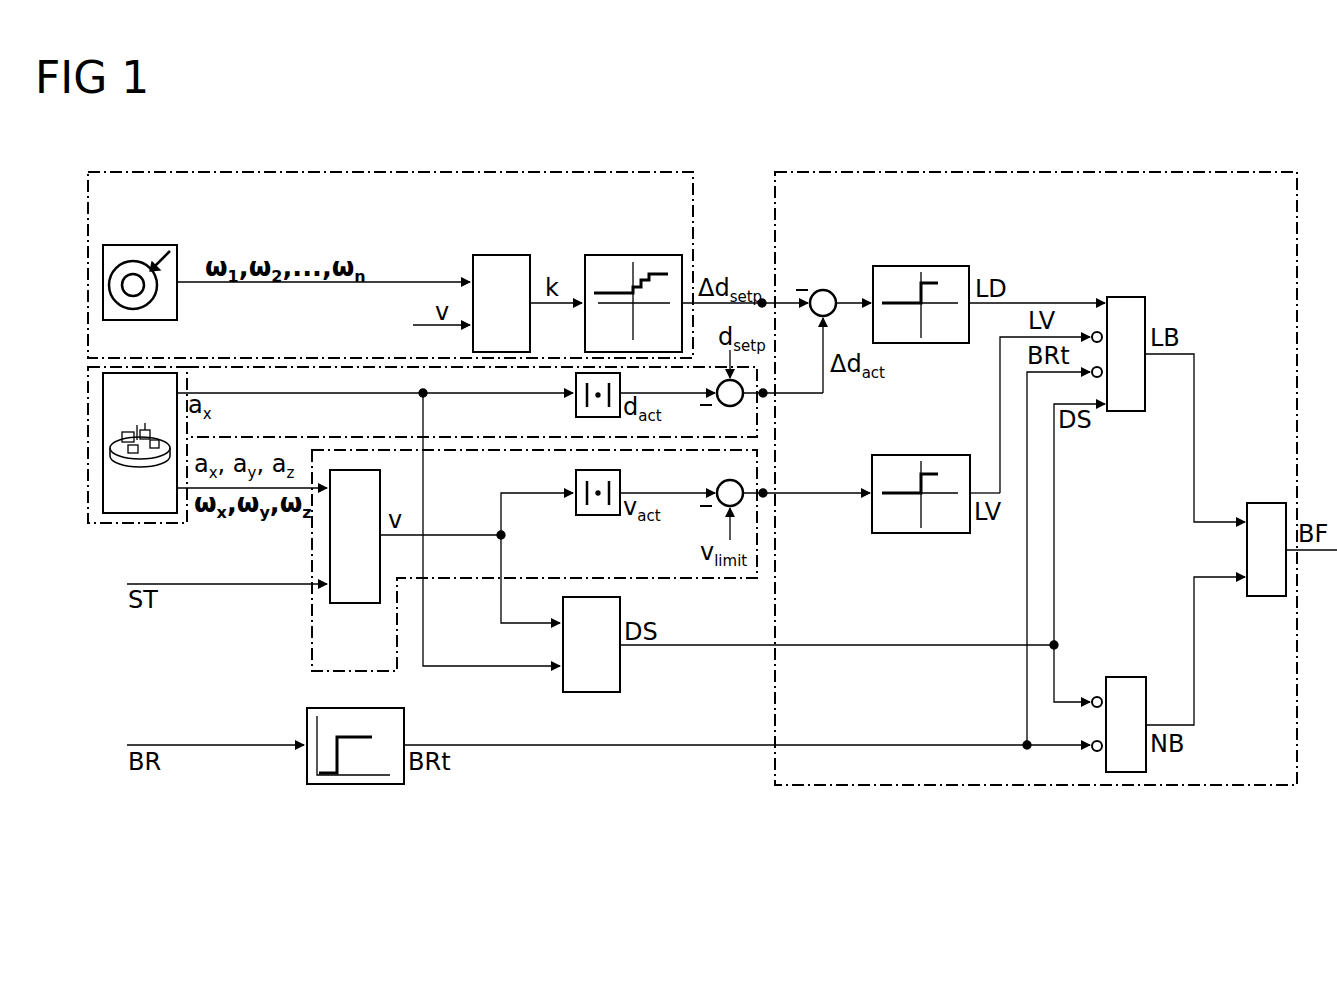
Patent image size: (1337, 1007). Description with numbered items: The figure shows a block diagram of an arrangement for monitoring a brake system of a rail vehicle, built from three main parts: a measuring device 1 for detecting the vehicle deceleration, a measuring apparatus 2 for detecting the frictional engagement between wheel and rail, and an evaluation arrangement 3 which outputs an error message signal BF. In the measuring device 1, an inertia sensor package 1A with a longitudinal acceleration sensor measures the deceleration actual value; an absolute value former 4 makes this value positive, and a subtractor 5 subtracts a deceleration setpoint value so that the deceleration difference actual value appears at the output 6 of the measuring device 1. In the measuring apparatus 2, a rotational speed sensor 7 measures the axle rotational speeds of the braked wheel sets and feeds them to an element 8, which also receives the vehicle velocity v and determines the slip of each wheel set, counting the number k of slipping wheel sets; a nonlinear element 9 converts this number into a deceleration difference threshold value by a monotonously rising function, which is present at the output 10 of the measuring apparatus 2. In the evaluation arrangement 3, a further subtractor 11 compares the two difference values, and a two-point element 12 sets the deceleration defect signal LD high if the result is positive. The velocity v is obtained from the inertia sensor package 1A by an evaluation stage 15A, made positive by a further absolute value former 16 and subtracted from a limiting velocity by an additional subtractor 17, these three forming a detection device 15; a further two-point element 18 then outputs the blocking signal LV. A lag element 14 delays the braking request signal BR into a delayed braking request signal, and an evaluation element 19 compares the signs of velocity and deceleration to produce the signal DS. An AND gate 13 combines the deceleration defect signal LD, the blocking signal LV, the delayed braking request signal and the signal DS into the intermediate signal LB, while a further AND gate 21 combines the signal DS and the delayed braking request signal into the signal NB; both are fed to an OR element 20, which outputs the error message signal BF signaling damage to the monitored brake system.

The measuring device 1 is at (133, 523).
The inertia sensor package 1A is at (103, 476).
The measuring apparatus 2 is at (388, 172).
The evaluation arrangement 3 is at (1045, 172).
The absolute value former 4 is at (576, 410).
The subtractor 5 is at (719, 406).
The output of the measuring device 6 is at (765, 396).
The rotational speed sensor 7 is at (140, 245).
The element 8 is at (499, 255).
The nonlinear element 9 is at (650, 255).
The output of the measuring apparatus 10 is at (762, 299).
The further subtractor 11 is at (828, 290).
The two-point element 12 is at (938, 266).
The AND gate 13 is at (1126, 297).
The lag element 14 is at (355, 784).
The detection device 15 is at (460, 578).
The evaluation stage 15A is at (355, 603).
The further absolute value former 16 is at (576, 478).
The additional subtractor 17 is at (720, 482).
The further two-point element 18 is at (901, 455).
The evaluation element 19 is at (622, 678).
The OR element 20 is at (1266, 503).
The further AND gate 21 is at (1126, 677).